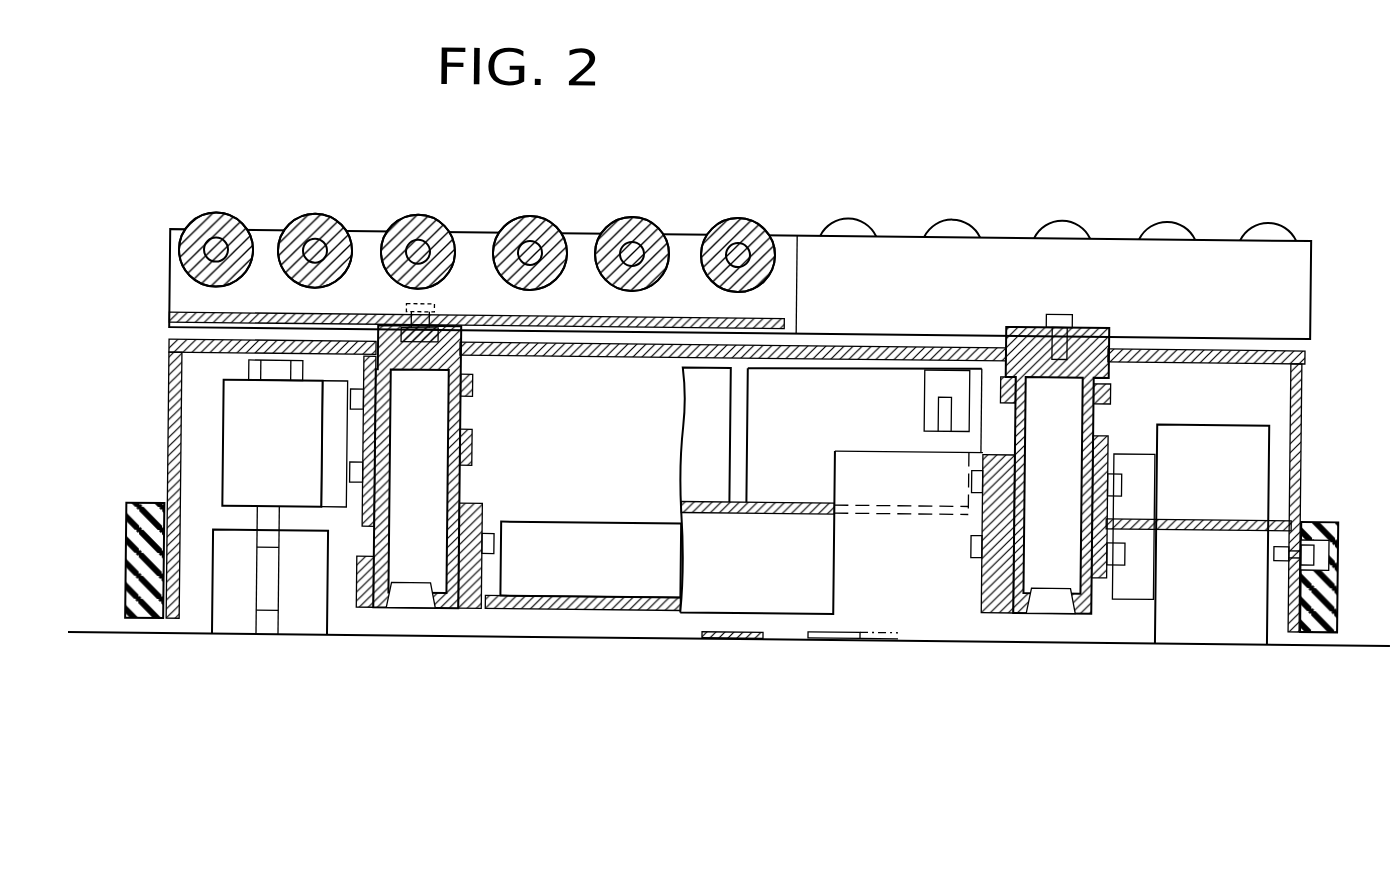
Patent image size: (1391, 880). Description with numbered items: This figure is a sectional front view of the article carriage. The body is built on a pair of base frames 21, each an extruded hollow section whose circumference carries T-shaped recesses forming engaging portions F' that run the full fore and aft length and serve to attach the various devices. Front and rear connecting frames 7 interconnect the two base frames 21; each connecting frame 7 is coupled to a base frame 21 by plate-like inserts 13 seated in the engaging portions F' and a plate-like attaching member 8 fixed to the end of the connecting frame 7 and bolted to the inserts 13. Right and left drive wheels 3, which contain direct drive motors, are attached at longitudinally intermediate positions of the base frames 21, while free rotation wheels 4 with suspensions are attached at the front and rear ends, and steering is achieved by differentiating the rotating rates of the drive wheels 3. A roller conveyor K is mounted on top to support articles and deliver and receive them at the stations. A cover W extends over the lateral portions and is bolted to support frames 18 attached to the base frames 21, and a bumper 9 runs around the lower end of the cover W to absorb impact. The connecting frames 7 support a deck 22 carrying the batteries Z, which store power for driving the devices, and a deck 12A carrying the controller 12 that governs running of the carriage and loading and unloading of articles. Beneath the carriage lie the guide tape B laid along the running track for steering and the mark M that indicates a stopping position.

The roller conveyor K is at (158, 266).
The cover W is at (166, 385).
The bumper 9 is at (125, 540).
The free rotation wheels 4 is at (298, 620).
The base frames 21 is at (382, 603).
The plate-like inserts 13 is at (369, 352).
The plate-like attaching member 8 is at (362, 390).
The controller 12 is at (613, 527).
The deck 12A is at (587, 604).
The deck 22 is at (770, 509).
The connecting frames 7 is at (857, 455).
The drive wheels 3 is at (1270, 432).
The support frames 18 is at (1220, 508).
The guide tape B is at (718, 625).
The mark M is at (832, 625).
The batteries Z is at (870, 350).
The engaging portions F is at (472, 476).